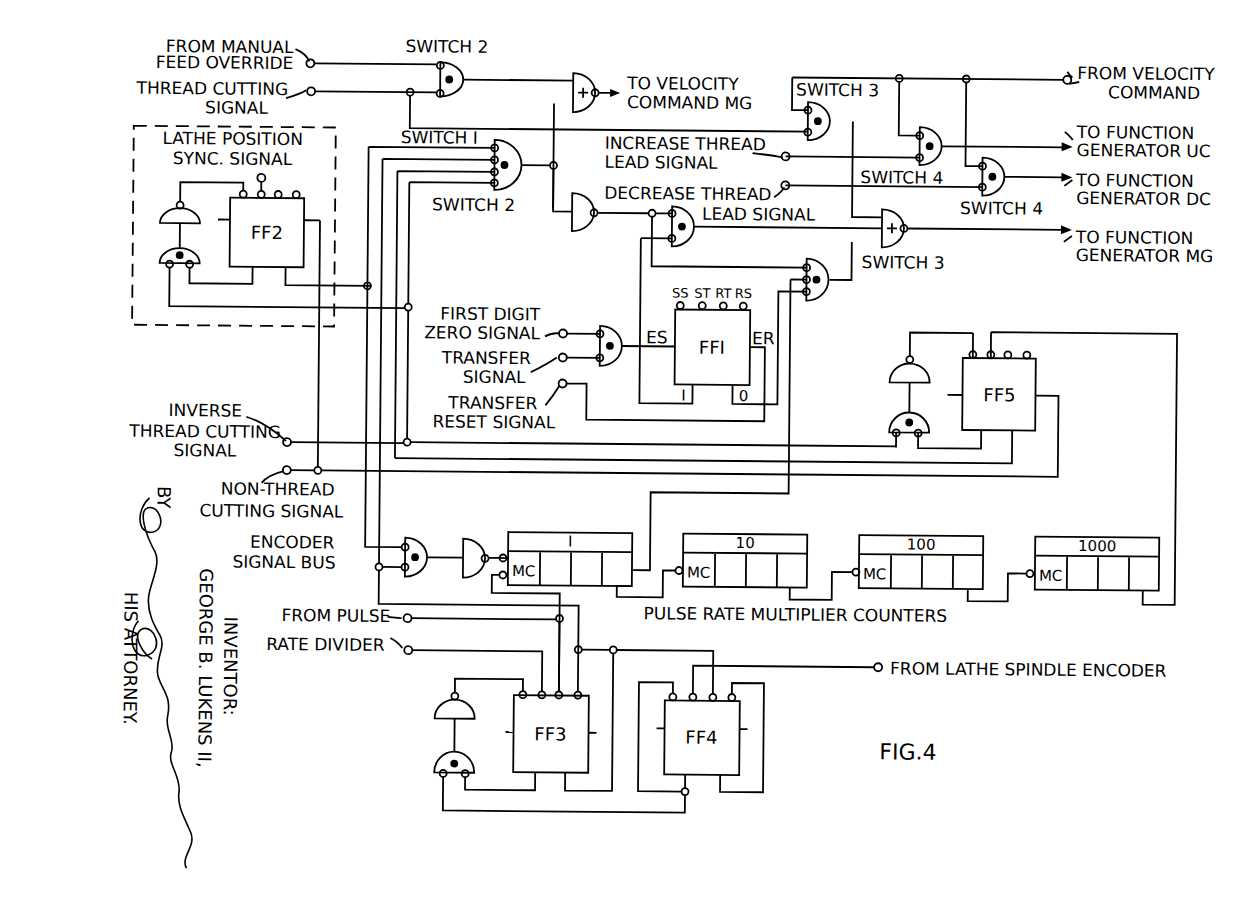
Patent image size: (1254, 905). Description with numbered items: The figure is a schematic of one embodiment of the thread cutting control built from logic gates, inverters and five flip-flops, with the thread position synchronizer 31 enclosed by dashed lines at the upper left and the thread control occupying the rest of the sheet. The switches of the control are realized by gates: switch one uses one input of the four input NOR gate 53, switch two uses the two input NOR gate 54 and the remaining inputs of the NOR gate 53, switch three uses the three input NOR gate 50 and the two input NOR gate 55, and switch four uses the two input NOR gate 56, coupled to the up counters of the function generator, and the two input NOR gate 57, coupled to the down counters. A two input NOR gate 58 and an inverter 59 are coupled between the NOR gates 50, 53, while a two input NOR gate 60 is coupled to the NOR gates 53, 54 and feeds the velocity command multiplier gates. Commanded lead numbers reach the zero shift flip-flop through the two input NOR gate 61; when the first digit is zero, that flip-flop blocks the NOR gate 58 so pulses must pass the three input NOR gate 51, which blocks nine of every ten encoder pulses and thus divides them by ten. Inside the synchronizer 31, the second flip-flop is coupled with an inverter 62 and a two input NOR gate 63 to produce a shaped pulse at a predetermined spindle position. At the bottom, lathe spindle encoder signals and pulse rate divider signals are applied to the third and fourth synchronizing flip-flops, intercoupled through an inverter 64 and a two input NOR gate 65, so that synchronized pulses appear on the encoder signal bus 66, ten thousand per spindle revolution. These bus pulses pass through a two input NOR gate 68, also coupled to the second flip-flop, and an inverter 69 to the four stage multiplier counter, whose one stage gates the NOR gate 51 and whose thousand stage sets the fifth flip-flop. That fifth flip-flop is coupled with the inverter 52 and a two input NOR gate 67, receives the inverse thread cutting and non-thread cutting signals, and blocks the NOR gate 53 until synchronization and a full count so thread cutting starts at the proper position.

The thread position synchronizer 31 is at (222, 329).
The three input NOR gate 50 is at (892, 214).
The three input NOR gate 51 is at (820, 296).
The inverter 52 is at (900, 367).
The four input NOR gate 53 is at (515, 159).
The two input NOR gate 54 is at (460, 90).
The two input NOR gate 55 is at (828, 114).
The two input NOR gate 56 is at (928, 125).
The two input NOR gate 57 is at (998, 161).
The two input NOR gate 58 is at (690, 238).
The inverter 59 is at (580, 234).
The two input NOR gate 60 is at (580, 77).
The two input NOR gate 61 is at (605, 327).
The inverter 62 is at (170, 210).
The two input NOR gate 63 is at (170, 254).
The inverter 64 is at (436, 713).
The two input NOR gate 65 is at (436, 764).
The encoder signal bus 66 is at (392, 153).
The two input NOR gate 67 is at (900, 417).
The two input NOR gate 68 is at (416, 530).
The inverter 69 is at (470, 530).